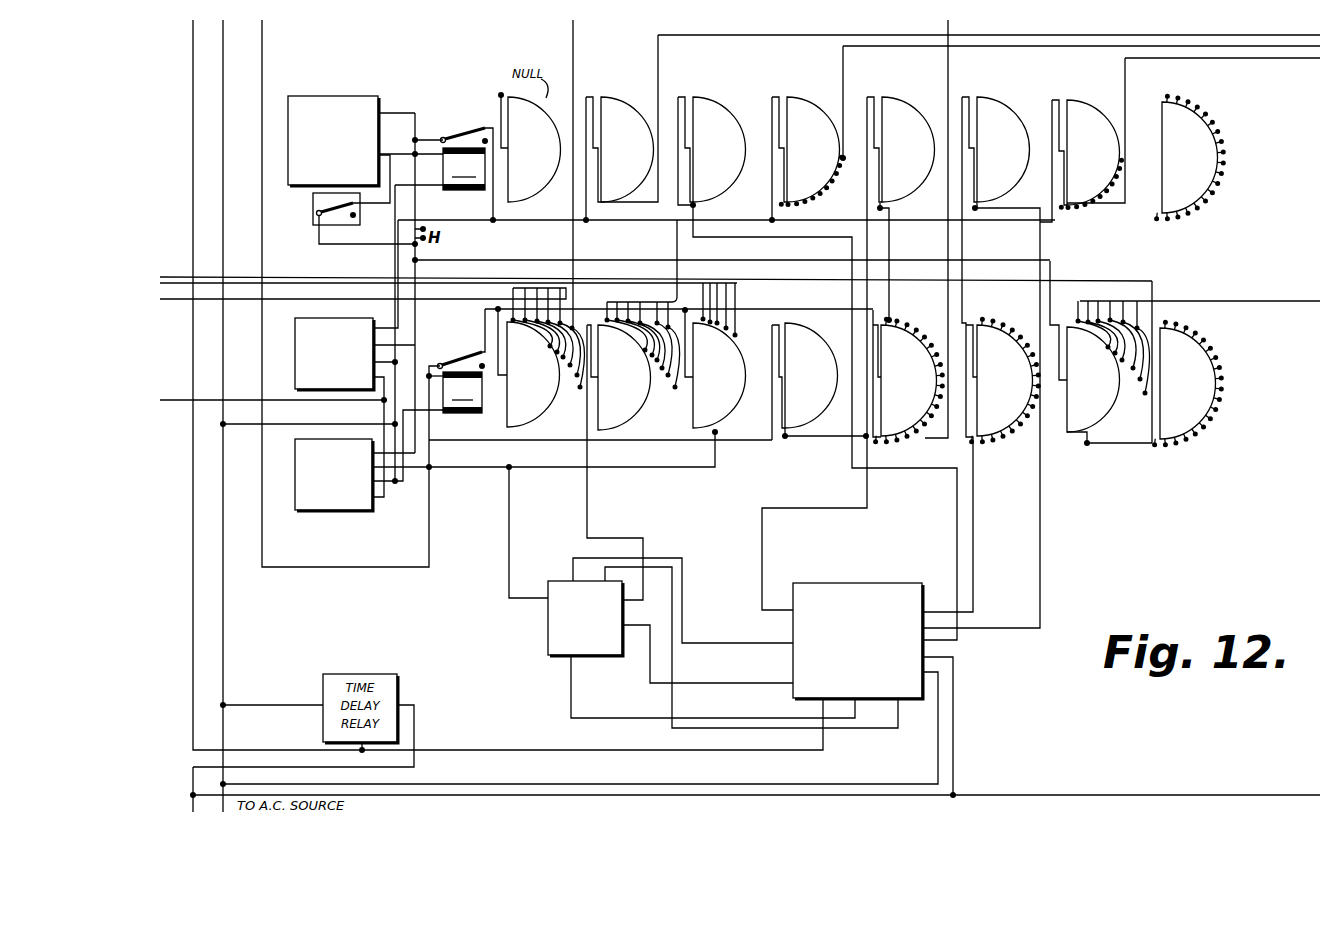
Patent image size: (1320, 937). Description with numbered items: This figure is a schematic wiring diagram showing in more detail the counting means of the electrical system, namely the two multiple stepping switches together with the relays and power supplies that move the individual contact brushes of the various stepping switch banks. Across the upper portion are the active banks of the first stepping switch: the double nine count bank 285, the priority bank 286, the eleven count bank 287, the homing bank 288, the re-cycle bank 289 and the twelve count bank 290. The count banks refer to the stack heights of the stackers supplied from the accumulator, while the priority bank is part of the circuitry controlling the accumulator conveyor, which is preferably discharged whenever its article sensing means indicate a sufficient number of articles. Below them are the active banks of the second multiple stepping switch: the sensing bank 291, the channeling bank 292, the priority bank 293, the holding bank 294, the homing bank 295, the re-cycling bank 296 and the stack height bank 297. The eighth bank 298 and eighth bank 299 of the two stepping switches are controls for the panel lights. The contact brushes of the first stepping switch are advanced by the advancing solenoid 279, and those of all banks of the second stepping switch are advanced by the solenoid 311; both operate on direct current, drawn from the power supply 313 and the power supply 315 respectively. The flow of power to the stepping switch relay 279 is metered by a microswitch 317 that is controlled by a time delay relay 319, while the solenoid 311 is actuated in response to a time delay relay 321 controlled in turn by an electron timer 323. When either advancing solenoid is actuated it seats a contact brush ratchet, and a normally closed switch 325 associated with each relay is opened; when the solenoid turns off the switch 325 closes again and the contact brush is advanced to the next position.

The advancing solenoid 279 is at (464, 169).
The double nine count bank 285 is at (636, 103).
The priority bank 286 is at (730, 104).
The eleven count bank 287 is at (824, 104).
The homing bank 288 is at (920, 104).
The re-cycle bank 289 is at (1010, 104).
The twelve count bank 290 is at (1097, 107).
The sensing bank 291 is at (523, 426).
The channeling bank 292 is at (623, 422).
The priority bank 293 is at (738, 343).
The holding bank 294 is at (803, 430).
The homing bank 295 is at (932, 300).
The re-cycling bank 296 is at (1000, 432).
The stack height bank 297 is at (1078, 428).
The eighth bank 298 is at (1206, 112).
The eighth bank 299 is at (1198, 363).
The solenoid 311 is at (462, 392).
The power supply 313 is at (295, 328).
The power supply 315 is at (332, 510).
The microswitch 317 is at (313, 206).
The time delay relay 319 is at (350, 96).
The time delay relay 321 is at (548, 628).
The electron timer 323 is at (868, 582).
The normally closed switch 325 is at (461, 124).